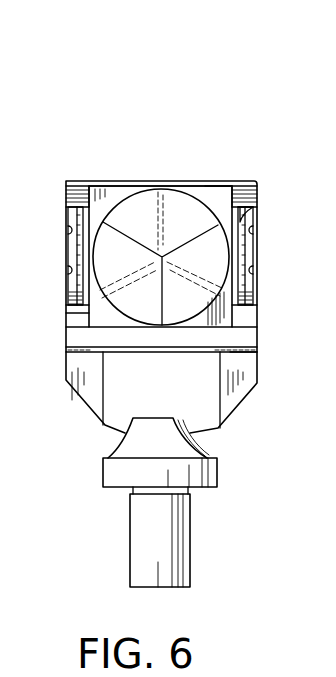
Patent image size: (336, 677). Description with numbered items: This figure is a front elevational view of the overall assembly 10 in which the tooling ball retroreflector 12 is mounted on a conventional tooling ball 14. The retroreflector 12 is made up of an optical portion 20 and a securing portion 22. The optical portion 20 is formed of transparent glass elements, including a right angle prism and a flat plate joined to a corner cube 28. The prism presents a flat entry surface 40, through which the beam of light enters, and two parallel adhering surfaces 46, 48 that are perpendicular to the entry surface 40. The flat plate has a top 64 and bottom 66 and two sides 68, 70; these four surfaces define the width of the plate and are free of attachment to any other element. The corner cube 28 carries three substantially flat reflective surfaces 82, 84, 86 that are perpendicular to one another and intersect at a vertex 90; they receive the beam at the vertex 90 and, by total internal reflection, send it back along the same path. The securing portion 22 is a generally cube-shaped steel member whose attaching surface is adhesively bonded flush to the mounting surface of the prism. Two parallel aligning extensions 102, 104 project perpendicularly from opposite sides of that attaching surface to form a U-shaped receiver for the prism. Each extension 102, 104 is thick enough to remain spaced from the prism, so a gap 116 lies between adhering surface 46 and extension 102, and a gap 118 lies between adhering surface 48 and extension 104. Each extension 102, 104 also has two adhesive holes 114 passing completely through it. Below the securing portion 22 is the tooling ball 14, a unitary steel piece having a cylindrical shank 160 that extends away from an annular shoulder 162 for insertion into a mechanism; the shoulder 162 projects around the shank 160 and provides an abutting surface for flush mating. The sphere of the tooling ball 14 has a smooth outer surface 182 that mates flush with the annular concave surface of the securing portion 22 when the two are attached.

The target holder assembly 10 is at (246, 90).
The tooling ball retroreflector 12 is at (88, 177).
The tooling ball 14 is at (196, 536).
The optical portion 20 is at (240, 327).
The securing portion 22 is at (66, 360).
The corner cube 28 is at (200, 190).
The entry surface 40 is at (215, 186).
The adhering surface 46 is at (88, 313).
The adhering surface 48 is at (245, 182).
The top 64 is at (112, 257).
The bottom 66 is at (247, 346).
The side 68 is at (88, 322).
The side 70 is at (240, 200).
The reflective surface 82 is at (176, 218).
The reflective surface 84 is at (225, 312).
The reflective surface 86 is at (116, 188).
The vertex 90 is at (165, 258).
The aligning extension 102 is at (68, 222).
The aligning extension 104 is at (253, 299).
The adhesive hole 114 is at (68, 272).
The gap 116 is at (83, 179).
The gap 118 is at (240, 203).
The shank 160 is at (130, 535).
The shoulder 162 is at (103, 474).
The outer surface 182 is at (131, 419).